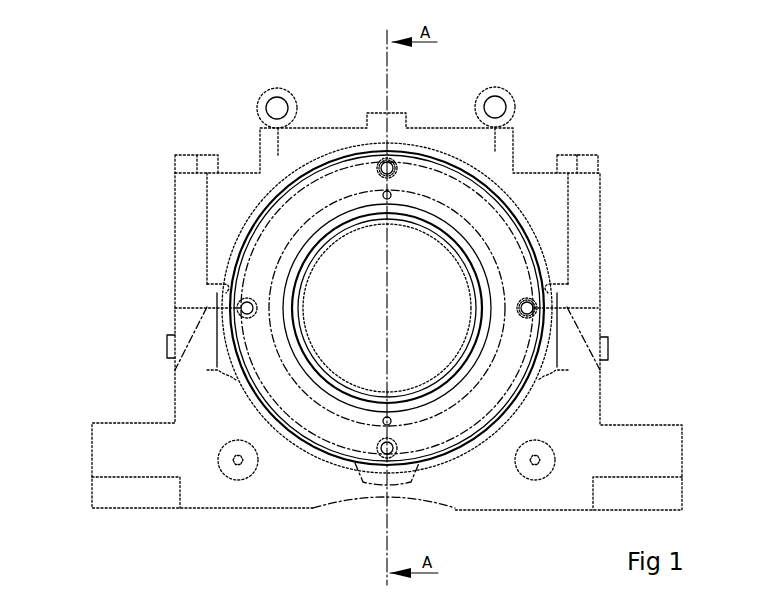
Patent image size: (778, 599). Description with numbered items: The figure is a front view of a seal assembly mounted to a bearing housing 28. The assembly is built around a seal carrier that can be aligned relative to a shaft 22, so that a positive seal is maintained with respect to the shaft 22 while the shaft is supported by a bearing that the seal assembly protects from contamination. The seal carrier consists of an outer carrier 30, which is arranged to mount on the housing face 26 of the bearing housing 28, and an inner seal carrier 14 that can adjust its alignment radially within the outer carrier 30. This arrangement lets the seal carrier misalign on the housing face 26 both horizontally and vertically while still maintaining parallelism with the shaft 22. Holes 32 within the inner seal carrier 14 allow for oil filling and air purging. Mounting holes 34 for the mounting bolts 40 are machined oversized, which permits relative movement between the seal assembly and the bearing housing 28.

The inner seal carrier 14 is at (299, 353).
The shaft 22 is at (317, 293).
The housing face 26 is at (233, 258).
The bearing housing 28 is at (212, 211).
The outer carrier 30 is at (248, 334).
The holes 32 is at (383, 197).
The mounting holes 34 is at (378, 168).
The mounting bolts 40 is at (378, 165).